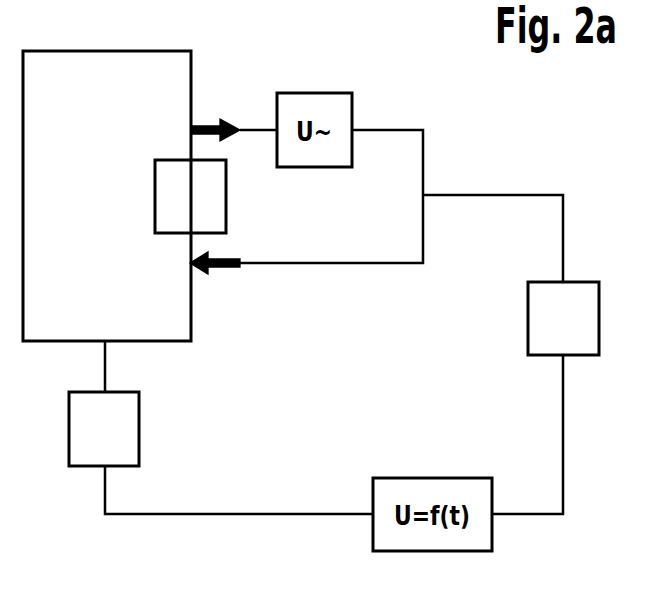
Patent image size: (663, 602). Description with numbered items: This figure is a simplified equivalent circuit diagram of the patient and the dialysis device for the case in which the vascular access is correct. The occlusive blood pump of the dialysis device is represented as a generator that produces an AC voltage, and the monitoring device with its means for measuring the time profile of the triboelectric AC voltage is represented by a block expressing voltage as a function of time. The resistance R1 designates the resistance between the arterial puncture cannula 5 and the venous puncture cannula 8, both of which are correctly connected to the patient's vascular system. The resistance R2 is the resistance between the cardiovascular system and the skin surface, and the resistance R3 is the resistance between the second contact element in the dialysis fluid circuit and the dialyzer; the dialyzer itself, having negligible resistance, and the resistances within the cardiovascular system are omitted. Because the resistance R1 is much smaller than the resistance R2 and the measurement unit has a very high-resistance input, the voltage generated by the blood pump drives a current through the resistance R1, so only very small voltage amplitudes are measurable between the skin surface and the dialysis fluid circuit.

The arterial puncture cannula 5 is at (232, 122).
The venous puncture cannula 8 is at (226, 270).
The resistance between arterial and venous puncture cannulas R1 is at (190, 196).
The resistance between the cardiovascular system and the skin surface R2 is at (104, 429).
The resistance between the second contact element in the dialysis fluid circuit and R3 is at (563, 318).